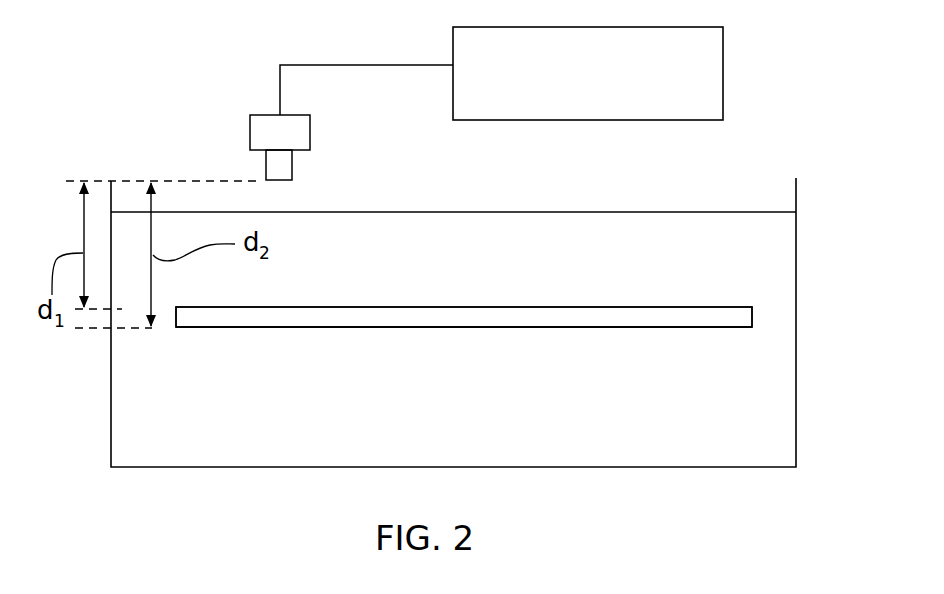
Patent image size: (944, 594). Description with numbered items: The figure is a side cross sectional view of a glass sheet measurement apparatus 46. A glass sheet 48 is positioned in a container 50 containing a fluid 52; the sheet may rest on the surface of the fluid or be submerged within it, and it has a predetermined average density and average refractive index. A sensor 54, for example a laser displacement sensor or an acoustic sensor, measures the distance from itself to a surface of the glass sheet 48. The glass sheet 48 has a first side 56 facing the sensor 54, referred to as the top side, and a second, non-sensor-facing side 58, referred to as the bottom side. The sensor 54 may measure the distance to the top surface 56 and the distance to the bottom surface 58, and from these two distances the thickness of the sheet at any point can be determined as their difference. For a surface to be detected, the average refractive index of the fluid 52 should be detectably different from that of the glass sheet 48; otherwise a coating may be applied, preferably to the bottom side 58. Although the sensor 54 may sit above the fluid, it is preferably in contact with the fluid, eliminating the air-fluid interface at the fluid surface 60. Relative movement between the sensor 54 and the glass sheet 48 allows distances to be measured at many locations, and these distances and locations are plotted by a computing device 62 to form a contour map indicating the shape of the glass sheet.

The glass sheet measurement apparatus 46 is at (198, 83).
The glass sheet 48 is at (762, 317).
The container 50 is at (796, 187).
The fluid 52 is at (563, 403).
The sensor 54 is at (266, 162).
The first side 56 is at (372, 307).
The second side 58 is at (412, 328).
The fluid surface 60 is at (333, 212).
The computing device 62 is at (723, 52).